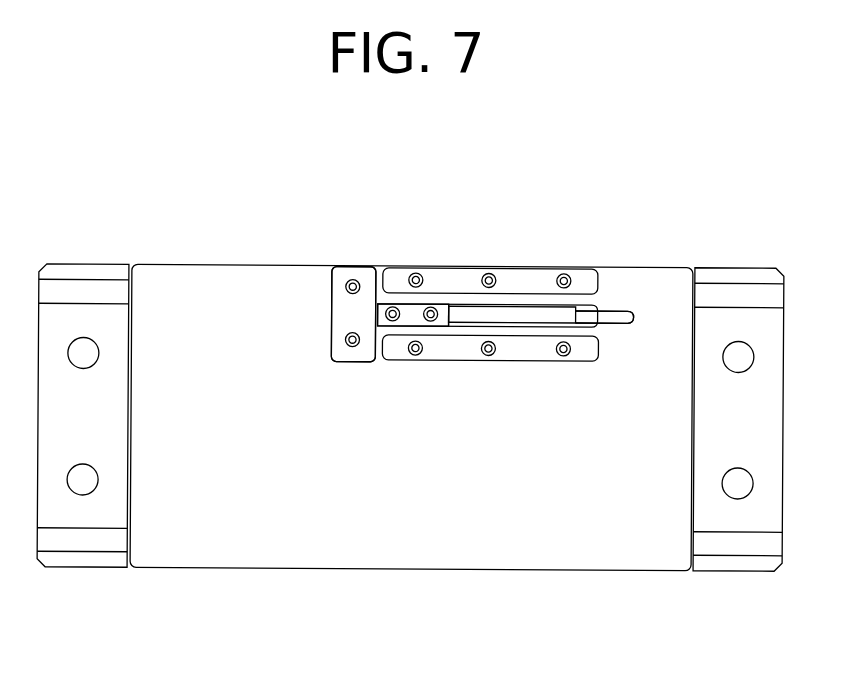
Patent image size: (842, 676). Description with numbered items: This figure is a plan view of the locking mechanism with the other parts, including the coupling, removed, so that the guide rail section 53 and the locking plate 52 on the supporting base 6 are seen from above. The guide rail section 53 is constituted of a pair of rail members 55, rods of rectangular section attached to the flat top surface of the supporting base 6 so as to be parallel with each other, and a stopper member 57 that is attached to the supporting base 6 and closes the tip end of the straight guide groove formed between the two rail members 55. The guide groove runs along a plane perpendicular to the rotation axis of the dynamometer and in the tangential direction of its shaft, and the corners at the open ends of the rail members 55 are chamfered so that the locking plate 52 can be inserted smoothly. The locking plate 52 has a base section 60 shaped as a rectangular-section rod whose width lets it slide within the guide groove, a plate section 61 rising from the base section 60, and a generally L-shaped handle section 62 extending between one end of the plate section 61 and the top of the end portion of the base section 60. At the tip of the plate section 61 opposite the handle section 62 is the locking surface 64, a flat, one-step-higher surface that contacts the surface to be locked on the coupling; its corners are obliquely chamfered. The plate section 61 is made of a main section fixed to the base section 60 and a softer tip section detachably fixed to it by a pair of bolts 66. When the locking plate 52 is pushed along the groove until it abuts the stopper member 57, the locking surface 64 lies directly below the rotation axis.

The supporting base 6 is at (416, 530).
The locking plate 52 is at (618, 326).
The guide rail section 53 is at (381, 361).
The rail members 55 is at (533, 288).
The stopper member 57 is at (348, 312).
The base section 60 is at (463, 300).
The plate section 61 is at (560, 320).
The handle section 62 is at (622, 310).
The locking surface 64 is at (412, 316).
The bolts 66 is at (392, 308).